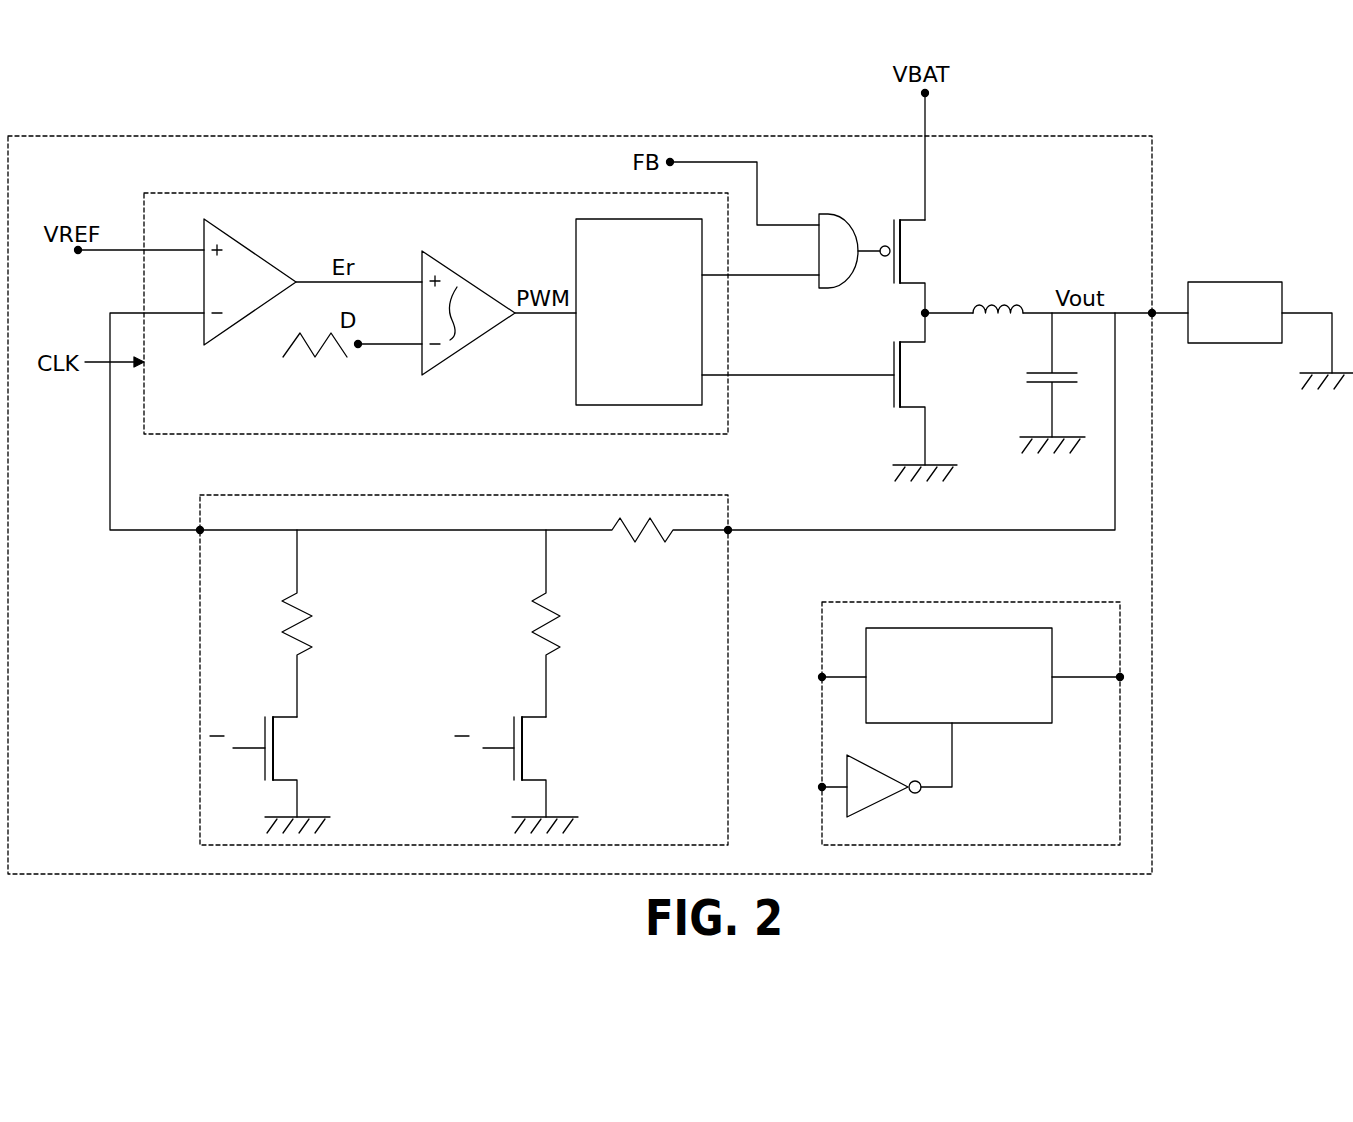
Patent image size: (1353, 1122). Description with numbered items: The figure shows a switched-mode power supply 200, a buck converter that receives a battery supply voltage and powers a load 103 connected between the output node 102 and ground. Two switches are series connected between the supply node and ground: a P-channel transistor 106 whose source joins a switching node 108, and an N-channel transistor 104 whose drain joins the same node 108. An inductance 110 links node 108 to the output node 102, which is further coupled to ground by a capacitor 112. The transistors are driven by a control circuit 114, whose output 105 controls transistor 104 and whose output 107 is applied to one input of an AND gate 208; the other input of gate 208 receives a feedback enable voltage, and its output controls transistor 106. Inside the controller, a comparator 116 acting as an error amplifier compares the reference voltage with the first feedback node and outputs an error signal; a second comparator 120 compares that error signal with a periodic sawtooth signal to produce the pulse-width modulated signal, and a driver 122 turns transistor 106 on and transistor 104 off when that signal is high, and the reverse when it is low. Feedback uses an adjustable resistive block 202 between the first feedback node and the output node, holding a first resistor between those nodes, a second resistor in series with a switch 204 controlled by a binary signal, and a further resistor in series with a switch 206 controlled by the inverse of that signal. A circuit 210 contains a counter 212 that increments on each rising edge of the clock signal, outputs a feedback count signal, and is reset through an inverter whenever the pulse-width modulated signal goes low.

The switched-mode power supply 200 is at (1105, 136).
The control circuit 114 is at (340, 193).
The comparator 116 is at (253, 262).
The comparator 120 is at (463, 270).
The driver 122 is at (607, 219).
The output 107 is at (742, 272).
The output 105 is at (740, 373).
The AND gate 208 is at (835, 224).
The switch 106 is at (888, 232).
The switch 104 is at (905, 410).
The node 108 is at (930, 308).
The inductance 110 is at (995, 302).
The capacitor 112 is at (1040, 393).
The output node 102 is at (1155, 320).
The load 103 is at (1265, 282).
The resistive block 202 is at (494, 670).
The switch 204 is at (535, 752).
The switch 206 is at (285, 752).
The circuit 210 is at (968, 697).
The counter 212 is at (932, 628).